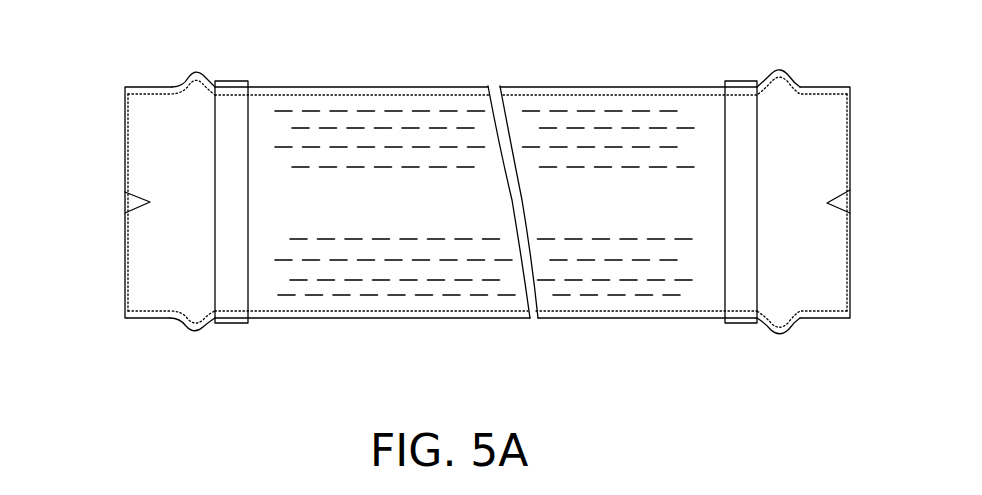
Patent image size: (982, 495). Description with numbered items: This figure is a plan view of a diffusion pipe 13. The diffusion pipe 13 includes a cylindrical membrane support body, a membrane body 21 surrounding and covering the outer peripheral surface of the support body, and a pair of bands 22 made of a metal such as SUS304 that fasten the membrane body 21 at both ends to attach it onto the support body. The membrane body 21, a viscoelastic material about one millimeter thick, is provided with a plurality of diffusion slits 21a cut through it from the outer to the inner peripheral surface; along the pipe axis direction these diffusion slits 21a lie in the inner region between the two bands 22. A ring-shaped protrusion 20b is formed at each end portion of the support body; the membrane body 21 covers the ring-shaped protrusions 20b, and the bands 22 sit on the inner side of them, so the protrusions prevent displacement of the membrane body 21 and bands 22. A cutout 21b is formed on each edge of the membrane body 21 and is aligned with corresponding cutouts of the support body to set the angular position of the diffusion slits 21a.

The diffusion pipe 13 is at (307, 371).
The ring-shaped protrusion 20b is at (190, 82).
The membrane body 21 is at (270, 112).
The diffusion slits 21a is at (426, 112).
The cutout 21b is at (136, 203).
The bands 22 is at (237, 298).